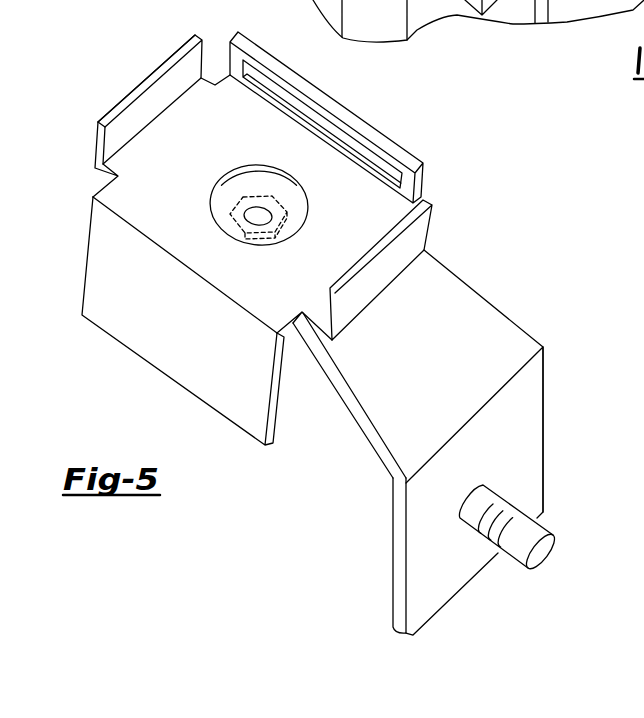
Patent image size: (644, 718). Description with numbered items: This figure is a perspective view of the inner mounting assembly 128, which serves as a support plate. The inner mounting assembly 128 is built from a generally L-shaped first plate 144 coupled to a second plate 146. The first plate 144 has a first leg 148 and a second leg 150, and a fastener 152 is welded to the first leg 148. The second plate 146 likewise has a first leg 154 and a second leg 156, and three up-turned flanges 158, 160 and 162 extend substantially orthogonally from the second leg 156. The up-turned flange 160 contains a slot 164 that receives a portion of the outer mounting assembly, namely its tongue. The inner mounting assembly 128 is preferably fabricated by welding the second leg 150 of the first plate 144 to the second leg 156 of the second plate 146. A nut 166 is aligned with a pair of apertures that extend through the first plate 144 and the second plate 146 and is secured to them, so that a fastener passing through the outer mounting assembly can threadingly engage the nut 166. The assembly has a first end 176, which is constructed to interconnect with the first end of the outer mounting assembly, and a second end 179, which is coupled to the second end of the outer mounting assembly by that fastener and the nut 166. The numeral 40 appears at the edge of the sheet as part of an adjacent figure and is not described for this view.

The inner mounting assembly 128 is at (332, 324).
The first plate 144 is at (463, 444).
The second plate 146 is at (263, 227).
The first leg 148 is at (400, 594).
The second leg 150 is at (380, 420).
The fastener 152 is at (513, 560).
The first leg 154 is at (113, 325).
The second leg 156 is at (118, 198).
The up-turned flange 158 is at (178, 58).
The up-turned flange 160 is at (326, 117).
The up-turned flange 162 is at (422, 243).
The slot 164 is at (303, 107).
The nut 166 is at (283, 212).
The first end 176 is at (566, 512).
The second end 179 is at (126, 60).
The frame member 40 is at (420, 5).